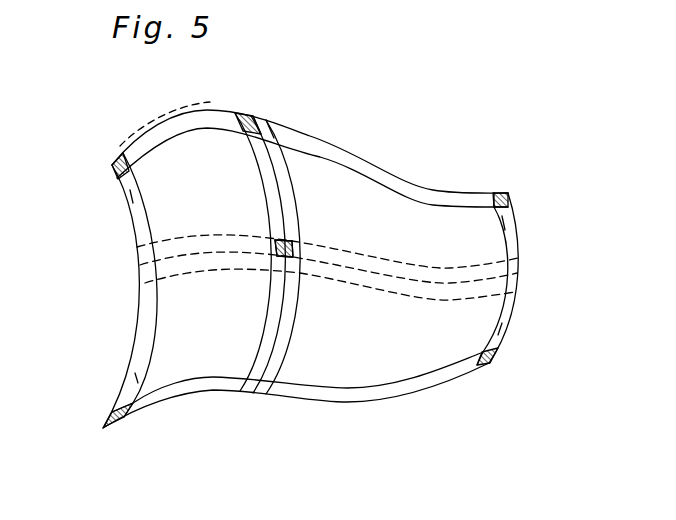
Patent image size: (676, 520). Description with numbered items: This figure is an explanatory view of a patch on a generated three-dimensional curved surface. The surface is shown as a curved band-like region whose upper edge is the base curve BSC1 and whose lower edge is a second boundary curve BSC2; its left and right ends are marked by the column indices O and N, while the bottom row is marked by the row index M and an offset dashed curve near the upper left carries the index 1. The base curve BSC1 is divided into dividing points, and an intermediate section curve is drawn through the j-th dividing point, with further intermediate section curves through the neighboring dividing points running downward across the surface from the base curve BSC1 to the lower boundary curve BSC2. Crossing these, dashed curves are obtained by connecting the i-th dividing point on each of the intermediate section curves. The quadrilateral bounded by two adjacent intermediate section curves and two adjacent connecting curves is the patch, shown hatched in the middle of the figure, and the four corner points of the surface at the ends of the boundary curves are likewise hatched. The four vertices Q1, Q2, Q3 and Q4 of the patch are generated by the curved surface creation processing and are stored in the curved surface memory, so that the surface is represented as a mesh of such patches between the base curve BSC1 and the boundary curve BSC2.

The base curve BSC1 is at (387, 173).
The second boundary curve (bottom edge of surface patch) BSC2 is at (328, 401).
The column index 0 (left boundary) O is at (126, 285).
The column index N (right boundary) N is at (452, 181).
The row index M (bottom boundary) M is at (112, 398).
The column index 1 (dashed offset curve) 1 is at (163, 124).
The j-th dividing point j is at (242, 114).
The vertex of the patch Q1 is at (276, 256).
The vertex of the patch Q2 is at (275, 239).
The vertex of the patch Q3 is at (292, 242).
The vertex of the patch Q4 is at (293, 258).